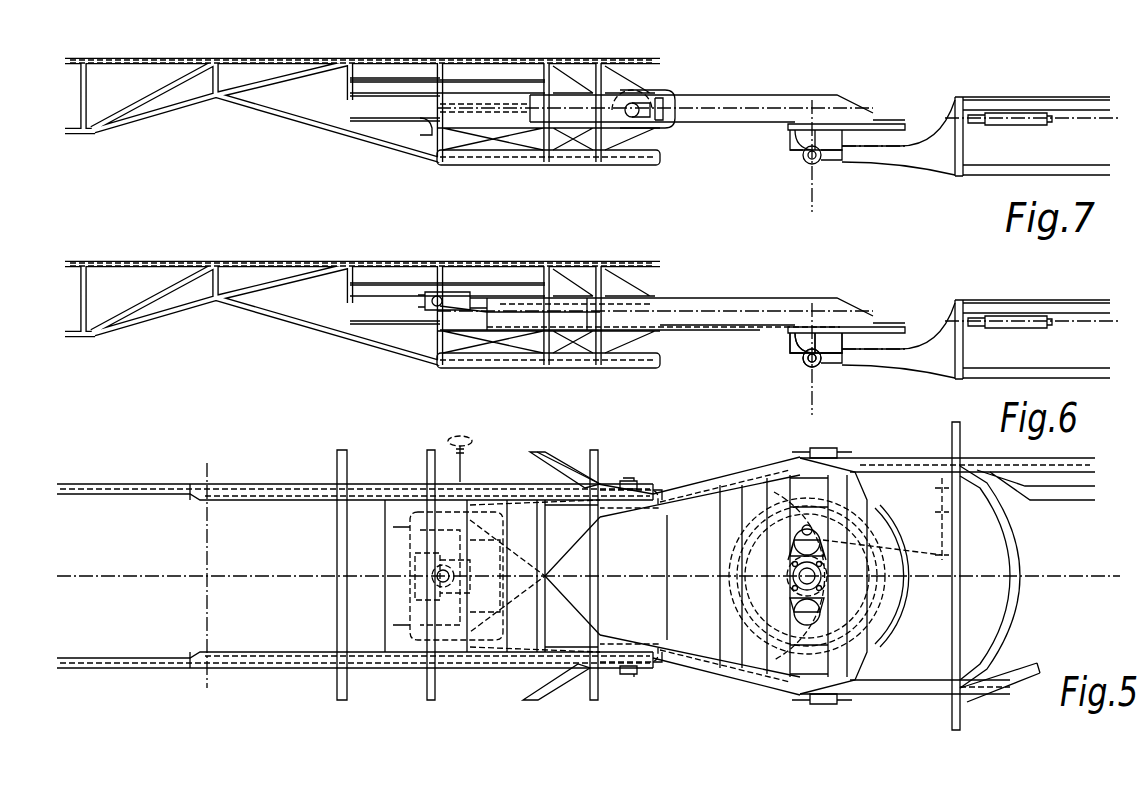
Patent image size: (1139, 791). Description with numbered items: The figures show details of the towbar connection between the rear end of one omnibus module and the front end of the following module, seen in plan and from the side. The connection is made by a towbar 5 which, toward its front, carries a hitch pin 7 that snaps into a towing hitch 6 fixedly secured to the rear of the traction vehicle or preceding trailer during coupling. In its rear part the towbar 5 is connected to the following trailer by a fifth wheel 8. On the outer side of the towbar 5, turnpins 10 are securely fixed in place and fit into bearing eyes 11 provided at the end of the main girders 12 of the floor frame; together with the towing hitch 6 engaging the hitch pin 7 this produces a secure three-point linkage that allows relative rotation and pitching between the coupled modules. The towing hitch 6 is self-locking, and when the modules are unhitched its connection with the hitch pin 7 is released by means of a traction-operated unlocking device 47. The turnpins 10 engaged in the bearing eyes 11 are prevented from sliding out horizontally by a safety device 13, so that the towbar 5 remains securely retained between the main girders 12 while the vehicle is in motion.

In FIG. 5, the towbar 5 is at (707, 492).
In FIG. 6, the towing hitch 6 is at (452, 265).
In FIG. 5, the hitch pin 7 is at (442, 572).
In FIG. 6, the fifth wheel 8 is at (816, 294).
In FIG. 5, the fifth wheel 8 is at (772, 530).
In FIG. 5, the turnpins 10 is at (630, 668).
In FIG. 7, the bearing eyes 11 is at (643, 112).
In FIG. 7, the main girders 12 is at (365, 110).
In FIG. 5, the main girders 12 is at (567, 500).
In FIG. 7, the safety device 13 is at (665, 95).
In FIG. 5, the traction-operated unlocking device 47 is at (460, 482).